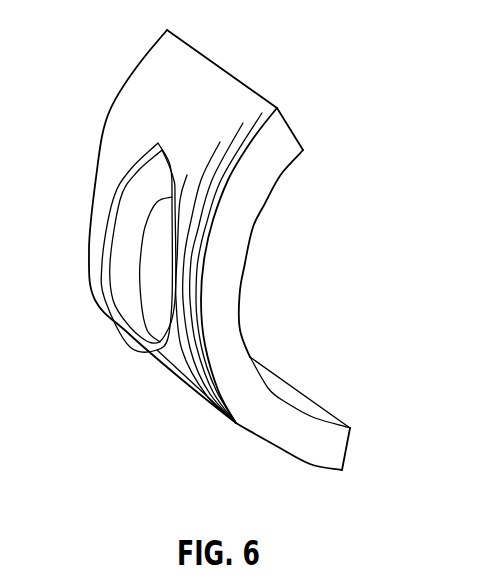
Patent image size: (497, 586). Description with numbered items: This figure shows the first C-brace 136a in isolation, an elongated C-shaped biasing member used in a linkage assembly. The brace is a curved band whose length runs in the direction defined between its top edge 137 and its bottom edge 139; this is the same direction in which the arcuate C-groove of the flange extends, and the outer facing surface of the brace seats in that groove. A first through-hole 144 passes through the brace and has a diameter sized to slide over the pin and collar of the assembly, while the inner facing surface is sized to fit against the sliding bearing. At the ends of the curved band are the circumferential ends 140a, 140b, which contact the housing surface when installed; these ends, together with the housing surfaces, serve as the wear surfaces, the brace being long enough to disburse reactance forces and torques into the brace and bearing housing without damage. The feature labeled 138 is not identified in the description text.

The bottom edge 139 is at (146, 53).
The circumferential end 140b is at (278, 115).
The top edge 137 is at (242, 225).
The first through-hole 144 is at (137, 233).
The first C-brace 136a is at (192, 402).
The edge 138 is at (308, 414).
The circumferential end 140a is at (350, 448).